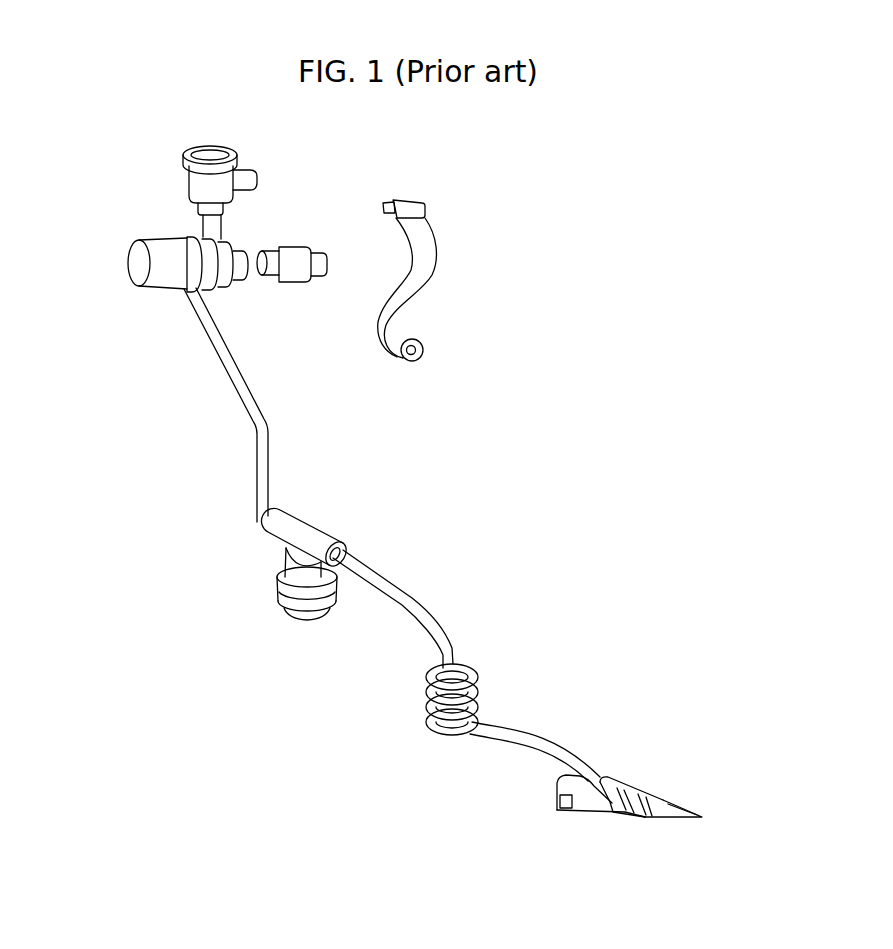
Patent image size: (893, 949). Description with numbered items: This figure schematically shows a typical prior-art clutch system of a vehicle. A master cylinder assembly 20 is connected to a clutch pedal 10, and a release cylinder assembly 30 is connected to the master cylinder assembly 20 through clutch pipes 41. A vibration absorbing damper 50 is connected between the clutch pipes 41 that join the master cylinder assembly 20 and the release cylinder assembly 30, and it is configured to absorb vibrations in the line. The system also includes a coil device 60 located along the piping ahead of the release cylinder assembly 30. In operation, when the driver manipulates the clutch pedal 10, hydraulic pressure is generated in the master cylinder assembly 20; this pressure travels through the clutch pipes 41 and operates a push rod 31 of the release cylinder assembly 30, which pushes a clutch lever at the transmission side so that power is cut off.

The clutch pedal 10 is at (456, 229).
The master cylinder assembly 20 is at (137, 223).
The release cylinder assembly 30 is at (645, 773).
The push rod 31 is at (677, 805).
The clutch pipes 41 is at (257, 410).
The vibration absorbing damper 50 is at (333, 522).
The coil device 60 is at (482, 669).